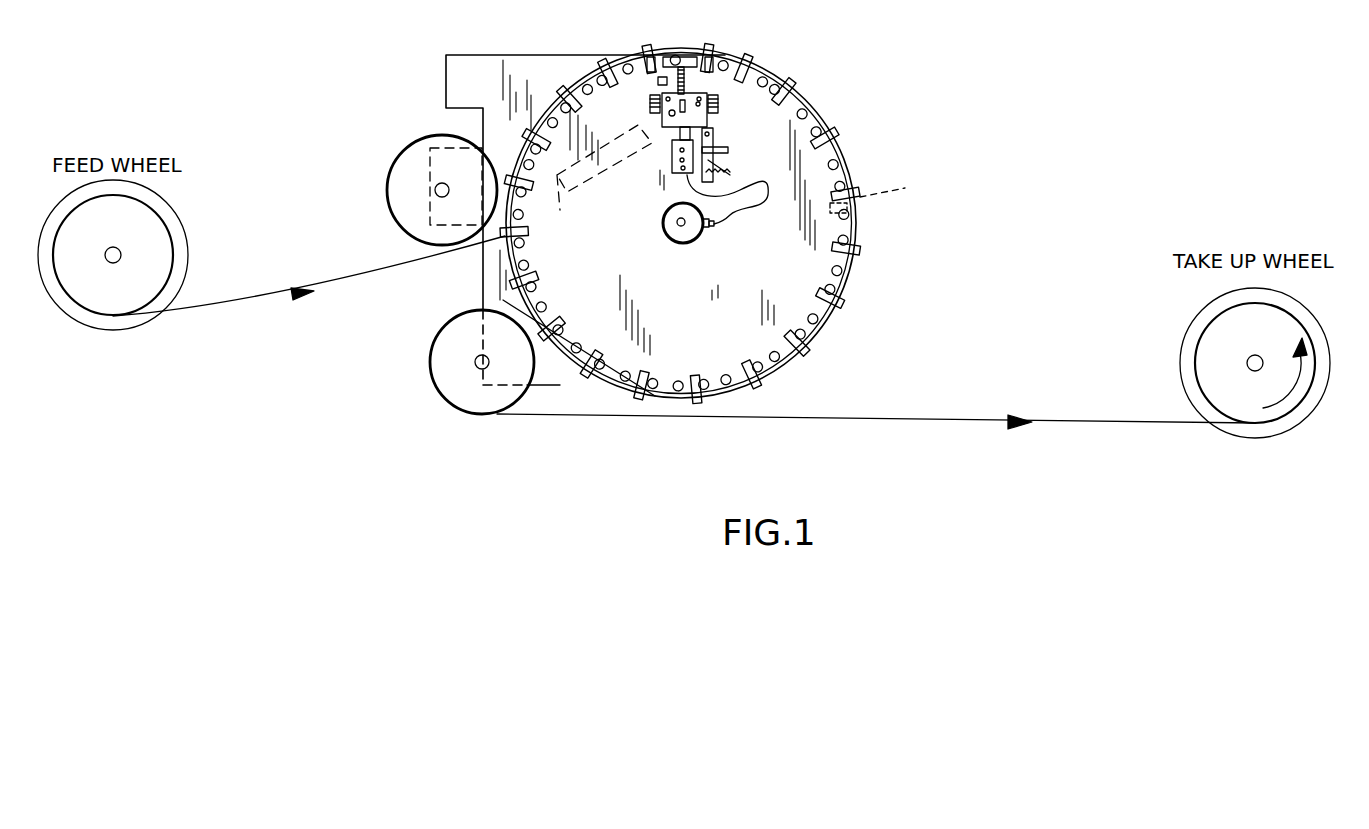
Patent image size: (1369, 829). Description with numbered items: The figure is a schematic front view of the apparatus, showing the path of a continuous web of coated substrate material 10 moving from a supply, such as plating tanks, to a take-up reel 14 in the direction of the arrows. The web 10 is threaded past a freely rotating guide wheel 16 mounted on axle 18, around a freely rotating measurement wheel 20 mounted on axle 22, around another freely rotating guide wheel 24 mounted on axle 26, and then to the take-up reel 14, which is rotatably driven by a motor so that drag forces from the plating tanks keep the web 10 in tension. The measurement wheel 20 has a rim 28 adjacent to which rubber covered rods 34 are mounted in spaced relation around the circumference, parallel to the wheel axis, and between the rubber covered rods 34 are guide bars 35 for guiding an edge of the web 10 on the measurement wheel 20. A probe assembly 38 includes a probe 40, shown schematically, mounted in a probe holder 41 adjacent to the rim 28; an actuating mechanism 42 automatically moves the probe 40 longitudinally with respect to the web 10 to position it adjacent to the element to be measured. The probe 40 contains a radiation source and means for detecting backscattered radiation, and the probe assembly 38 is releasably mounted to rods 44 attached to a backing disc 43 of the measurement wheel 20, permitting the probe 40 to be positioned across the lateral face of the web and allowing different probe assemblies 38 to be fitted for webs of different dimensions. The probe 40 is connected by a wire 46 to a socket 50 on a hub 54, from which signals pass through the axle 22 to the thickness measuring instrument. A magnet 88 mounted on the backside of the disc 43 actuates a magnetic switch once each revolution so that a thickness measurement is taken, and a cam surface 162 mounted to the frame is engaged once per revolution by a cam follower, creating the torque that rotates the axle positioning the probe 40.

The web of coated substrate material 10 is at (210, 302).
The take-up reel 14 is at (1215, 318).
The guide wheel 16 is at (413, 173).
The axle 18 is at (435, 192).
The measurement wheel 20 is at (736, 206).
The axle 22 is at (678, 223).
The guide wheel 24 is at (476, 367).
The axle 26 is at (454, 362).
The rim 28 is at (860, 226).
The rubber covered rods 34 is at (790, 88).
The guide bars 35 is at (855, 190).
The probe assembly 38 is at (641, 74).
The probe 40 is at (658, 80).
The probe holder 41 is at (716, 114).
The actuating mechanism 42 is at (728, 144).
The backing disc 43 is at (811, 278).
The rods 44 is at (713, 55).
The wire 46 is at (760, 207).
The socket 50 is at (708, 232).
The hub 54 is at (697, 243).
The magnet 88 is at (905, 188).
The cam surface 162 is at (568, 190).